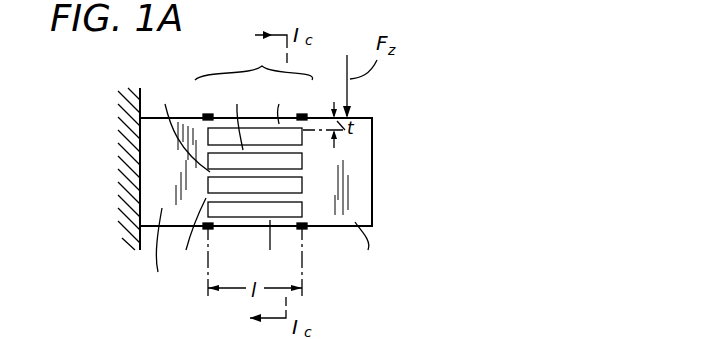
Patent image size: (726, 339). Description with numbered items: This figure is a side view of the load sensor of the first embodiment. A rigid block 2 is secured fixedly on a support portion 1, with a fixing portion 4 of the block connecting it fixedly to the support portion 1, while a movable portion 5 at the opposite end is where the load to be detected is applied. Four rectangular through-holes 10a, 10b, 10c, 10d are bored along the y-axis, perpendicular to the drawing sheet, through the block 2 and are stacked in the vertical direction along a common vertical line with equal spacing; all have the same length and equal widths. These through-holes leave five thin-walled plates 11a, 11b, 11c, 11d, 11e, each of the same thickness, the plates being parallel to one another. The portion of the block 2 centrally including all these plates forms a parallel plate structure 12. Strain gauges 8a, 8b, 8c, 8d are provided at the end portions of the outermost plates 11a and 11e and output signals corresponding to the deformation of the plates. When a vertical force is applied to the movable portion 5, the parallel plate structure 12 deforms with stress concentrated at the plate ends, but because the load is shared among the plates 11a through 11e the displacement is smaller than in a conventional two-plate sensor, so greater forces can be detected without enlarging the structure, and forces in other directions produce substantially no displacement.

The support portion 1 is at (129, 141).
The rigid block 2 is at (366, 117).
The fixing portion 4 is at (153, 250).
The movable portion 5 is at (366, 247).
The strain gauge 8a is at (208, 117).
The strain gauge 8b is at (303, 117).
The strain gauge 8c is at (209, 226).
The strain gauge 8d is at (304, 226).
The rectangular through-hole 10a is at (302, 143).
The rectangular through-hole 10b is at (302, 168).
The rectangular through-hole 10c is at (302, 193).
The rectangular through-hole 10d is at (302, 217).
The thin-walled plate 11a is at (284, 104).
The thin-walled plate 11b is at (244, 117).
The thin-walled plate 11c is at (178, 128).
The thin-walled plate 11d is at (190, 235).
The thin-walled plate 11e is at (276, 246).
The parallel plate structure 12 is at (254, 62).